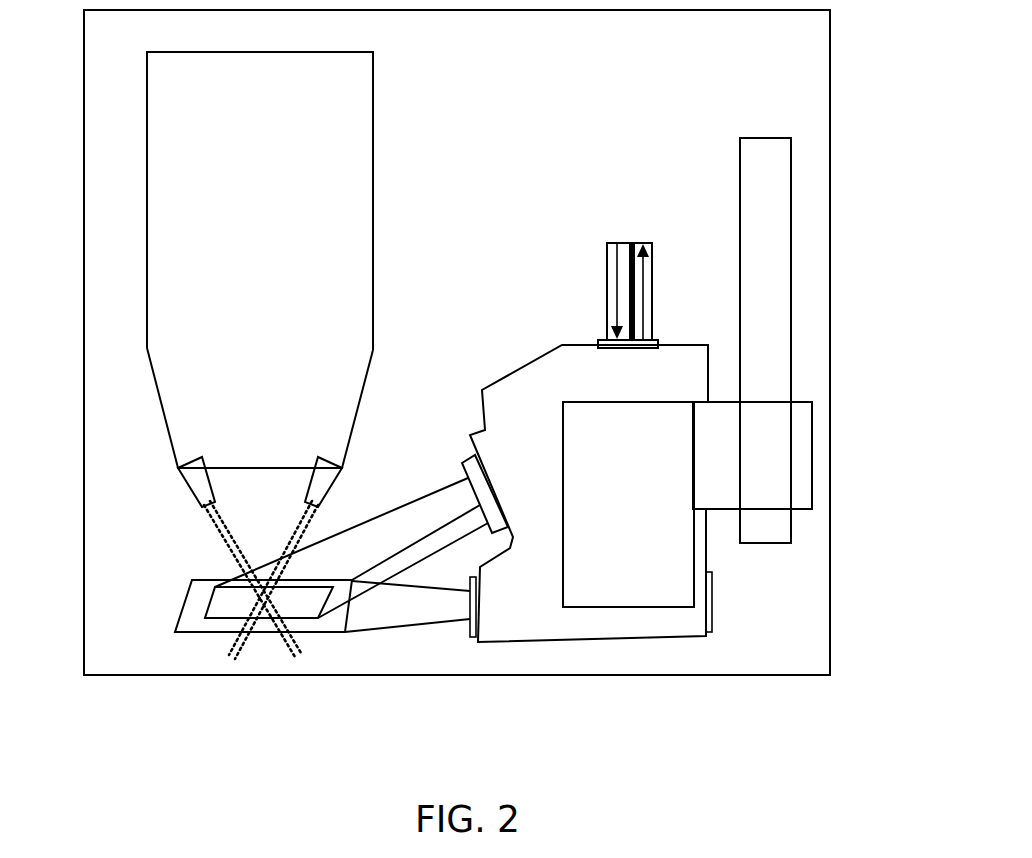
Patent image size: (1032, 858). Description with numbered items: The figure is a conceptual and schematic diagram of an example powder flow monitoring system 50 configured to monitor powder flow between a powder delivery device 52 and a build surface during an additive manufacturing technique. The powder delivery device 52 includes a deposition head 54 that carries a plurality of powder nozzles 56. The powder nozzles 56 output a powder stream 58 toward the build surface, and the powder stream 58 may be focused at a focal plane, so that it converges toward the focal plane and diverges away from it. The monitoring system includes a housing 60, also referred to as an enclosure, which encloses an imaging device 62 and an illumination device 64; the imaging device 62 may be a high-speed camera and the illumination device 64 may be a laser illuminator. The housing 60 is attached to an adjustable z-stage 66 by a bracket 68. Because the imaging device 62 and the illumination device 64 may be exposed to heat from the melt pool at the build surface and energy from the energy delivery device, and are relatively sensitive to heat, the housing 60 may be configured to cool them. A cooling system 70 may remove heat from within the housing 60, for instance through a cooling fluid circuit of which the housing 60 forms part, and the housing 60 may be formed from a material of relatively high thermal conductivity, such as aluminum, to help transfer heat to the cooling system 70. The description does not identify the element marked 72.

The powder flow monitoring system 50 is at (514, 196).
The powder delivery device 52 is at (103, 192).
The deposition head 54 is at (147, 343).
The powder nozzles 56 is at (178, 462).
The powder stream 58 is at (232, 552).
The housing 60 is at (700, 362).
The imaging device 62 is at (486, 518).
The illumination device 64 is at (470, 638).
The adjustable z-stage 66 is at (792, 160).
The bracket 68 is at (787, 423).
The cooling system 70 is at (642, 276).
The mirrors 72 is at (495, 457).